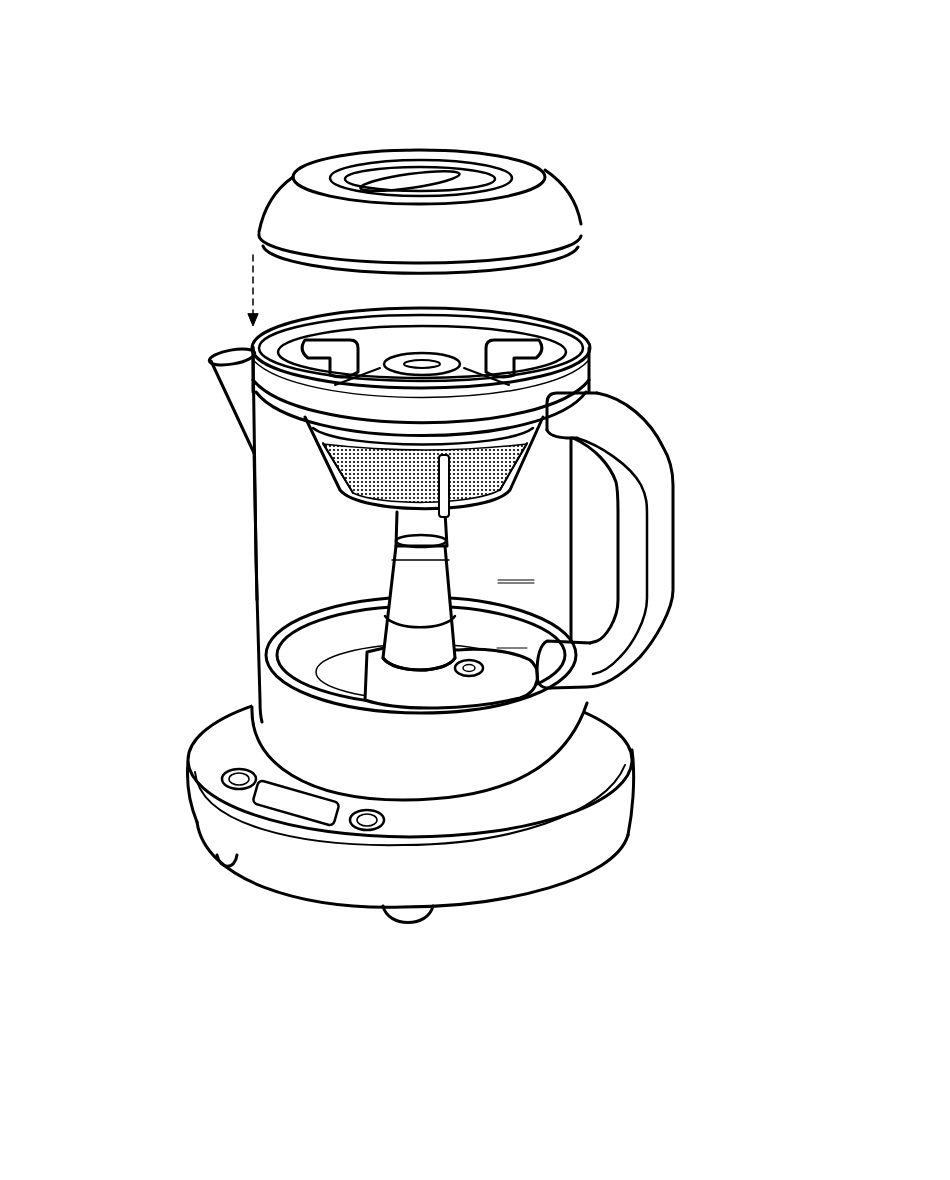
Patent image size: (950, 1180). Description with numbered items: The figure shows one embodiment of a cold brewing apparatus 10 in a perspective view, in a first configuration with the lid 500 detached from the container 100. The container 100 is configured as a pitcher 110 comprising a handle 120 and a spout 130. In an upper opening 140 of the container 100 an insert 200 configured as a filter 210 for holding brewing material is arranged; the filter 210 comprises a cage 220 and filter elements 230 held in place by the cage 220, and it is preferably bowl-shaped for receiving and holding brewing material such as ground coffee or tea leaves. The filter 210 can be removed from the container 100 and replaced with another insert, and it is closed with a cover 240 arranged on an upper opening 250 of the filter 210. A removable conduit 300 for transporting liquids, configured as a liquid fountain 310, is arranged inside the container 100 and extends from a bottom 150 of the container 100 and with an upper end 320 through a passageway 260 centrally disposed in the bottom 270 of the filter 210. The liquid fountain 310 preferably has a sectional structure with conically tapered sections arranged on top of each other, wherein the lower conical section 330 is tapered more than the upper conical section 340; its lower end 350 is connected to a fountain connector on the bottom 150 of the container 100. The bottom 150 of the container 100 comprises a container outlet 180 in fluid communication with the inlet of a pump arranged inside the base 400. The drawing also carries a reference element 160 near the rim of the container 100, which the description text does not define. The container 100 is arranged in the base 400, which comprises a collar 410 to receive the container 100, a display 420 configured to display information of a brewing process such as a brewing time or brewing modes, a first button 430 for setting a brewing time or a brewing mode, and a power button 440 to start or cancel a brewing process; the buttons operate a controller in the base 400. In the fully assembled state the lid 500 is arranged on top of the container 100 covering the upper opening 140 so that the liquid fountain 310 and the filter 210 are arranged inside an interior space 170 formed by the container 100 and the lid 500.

The cold brewing apparatus 10 is at (122, 62).
The container 100 is at (394, 515).
The pitcher 110 is at (261, 496).
The handle 120 is at (664, 460).
The spout 130 is at (207, 357).
The upper opening 140 is at (556, 338).
The bottom 150 is at (340, 666).
The rim outer edge 160 is at (590, 345).
The interior space 170 is at (575, 586).
The container outlet 180 is at (482, 675).
The insert 200 is at (254, 466).
The filter 210 is at (345, 460).
The cage 220 is at (527, 460).
The filter elements 230 is at (535, 438).
The cover 240 is at (456, 364).
The upper opening 250 is at (290, 360).
The passageway 260 is at (548, 581).
The bottom 270 is at (451, 484).
The removable conduit 300 is at (385, 585).
The liquid fountain 310 is at (383, 610).
The upper end 320 is at (406, 516).
The lower conical section 330 is at (575, 625).
The upper conical section 340 is at (388, 563).
The lower end 350 is at (414, 654).
The base 400 is at (598, 816).
The collar 410 is at (575, 718).
The display 420 is at (292, 802).
The first button 430 is at (224, 780).
The power button 440 is at (387, 823).
The lid 500 is at (322, 178).